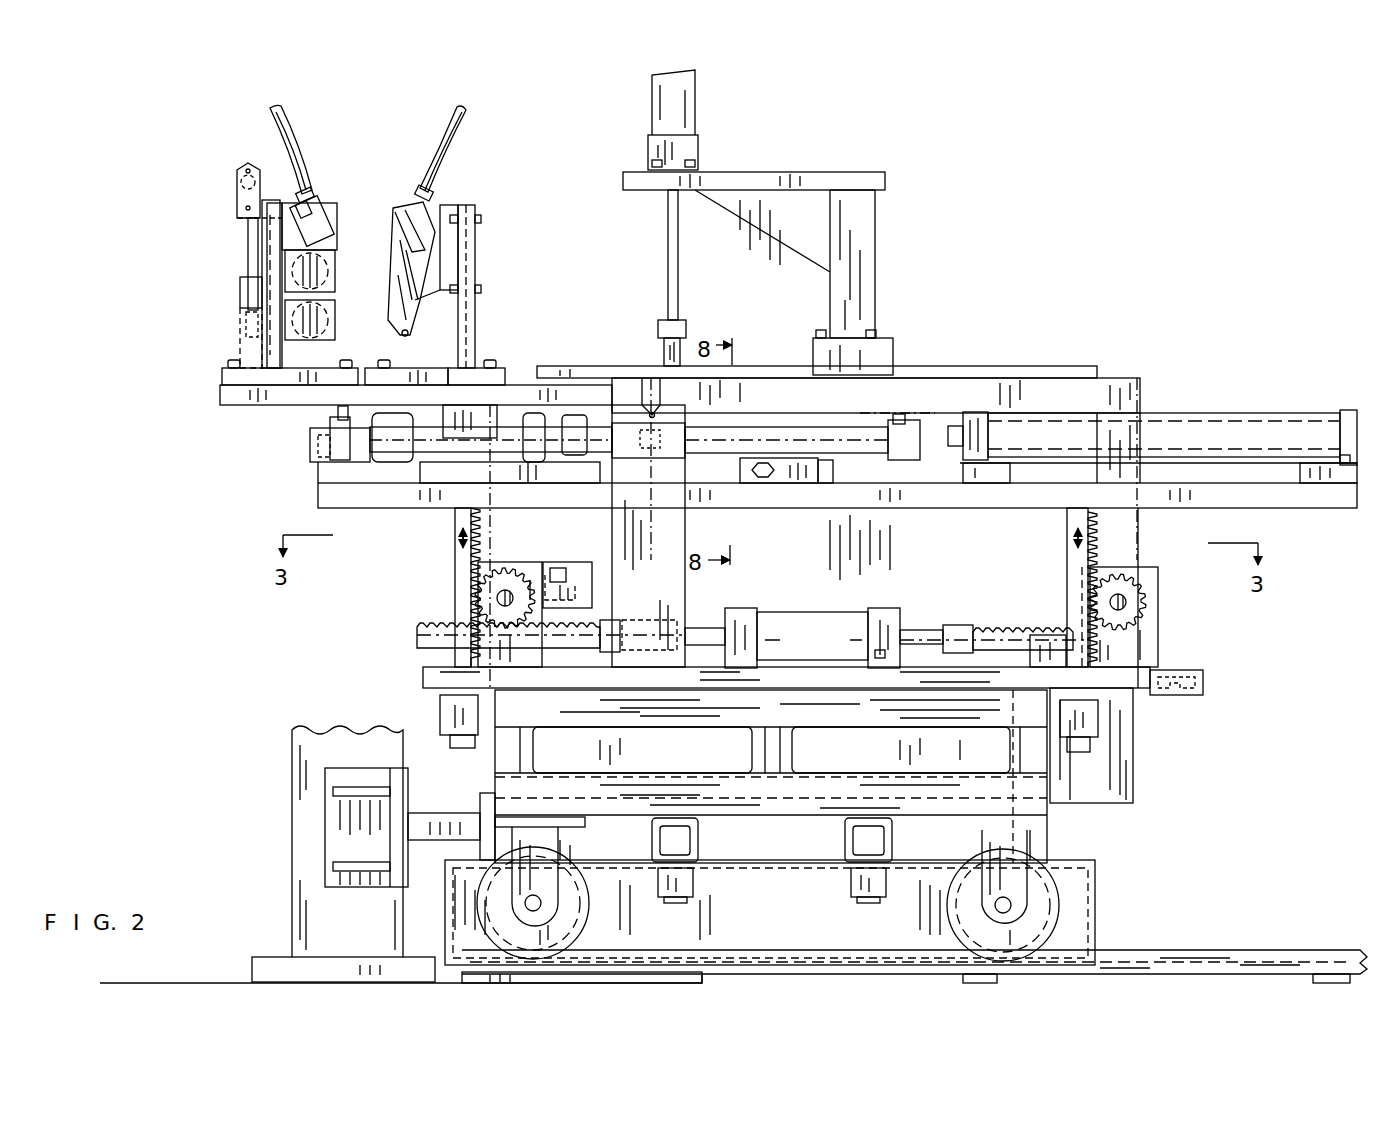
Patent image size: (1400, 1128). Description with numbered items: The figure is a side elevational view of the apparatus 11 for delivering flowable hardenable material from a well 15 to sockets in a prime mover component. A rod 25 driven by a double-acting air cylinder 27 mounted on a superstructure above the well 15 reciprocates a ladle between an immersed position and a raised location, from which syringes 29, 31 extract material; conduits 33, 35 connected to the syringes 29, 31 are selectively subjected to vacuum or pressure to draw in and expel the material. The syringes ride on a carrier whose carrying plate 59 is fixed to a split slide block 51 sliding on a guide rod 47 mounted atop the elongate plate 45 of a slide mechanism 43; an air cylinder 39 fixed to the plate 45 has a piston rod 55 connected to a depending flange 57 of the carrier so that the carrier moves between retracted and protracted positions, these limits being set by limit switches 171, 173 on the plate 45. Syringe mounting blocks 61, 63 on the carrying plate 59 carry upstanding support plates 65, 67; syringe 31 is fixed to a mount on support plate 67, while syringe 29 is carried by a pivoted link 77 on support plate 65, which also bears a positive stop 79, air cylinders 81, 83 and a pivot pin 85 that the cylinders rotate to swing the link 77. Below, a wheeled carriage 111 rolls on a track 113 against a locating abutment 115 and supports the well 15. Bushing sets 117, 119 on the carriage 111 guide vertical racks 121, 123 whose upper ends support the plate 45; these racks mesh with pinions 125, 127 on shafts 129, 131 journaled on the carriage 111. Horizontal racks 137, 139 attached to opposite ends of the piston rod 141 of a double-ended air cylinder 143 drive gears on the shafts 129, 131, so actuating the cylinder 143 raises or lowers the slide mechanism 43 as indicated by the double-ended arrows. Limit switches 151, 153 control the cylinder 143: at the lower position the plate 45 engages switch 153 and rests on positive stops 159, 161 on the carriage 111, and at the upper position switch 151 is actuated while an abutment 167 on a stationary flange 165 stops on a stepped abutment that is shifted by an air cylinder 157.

The apparatus 11 is at (1178, 357).
The well 15 is at (1068, 365).
The rod 25 is at (678, 292).
The double-acting air cylinder 27 is at (697, 106).
The syringe 29 is at (318, 220).
The syringe 31 is at (400, 216).
The conduit 33 is at (290, 153).
The conduit 35 is at (460, 127).
The double acting air cylinder 39 is at (1210, 452).
The slide mechanism 43 is at (1320, 528).
The plate 45 is at (1342, 506).
The guide rod 47 is at (435, 448).
The split slide block 51 is at (372, 466).
The piston rod 55 is at (938, 434).
The depending flange 57 is at (460, 412).
The carrying plate 59 is at (222, 394).
The syringe mounting block 61 is at (222, 379).
The syringe mounting block 63 is at (467, 366).
The support plate 65 is at (276, 203).
The support plate 67 is at (477, 253).
The link 77 is at (258, 247).
The positive stop 79 is at (237, 189).
The air cylinder 81 is at (328, 266).
The air cylinder 83 is at (328, 313).
The pivot pin 85 is at (878, 267).
The wheeled carriage 111 is at (1218, 763).
The track 113 is at (1147, 958).
The locating abutment 115 is at (482, 806).
The bushing set 117 is at (440, 712).
The bushing set 119 is at (1100, 718).
The vertical rack 121 is at (455, 552).
The vertical rack 123 is at (1097, 530).
The pinion 125 is at (478, 588).
The pinion 127 is at (1135, 613).
The shaft 129 is at (497, 598).
The shaft 131 is at (1126, 601).
The horizontal rack 137 is at (417, 636).
The horizontal rack 139 is at (1022, 616).
The piston rod 141 is at (712, 624).
The double ended, double acting air cylinder 143 is at (836, 649).
The limit switch 151 is at (656, 401).
The limit switch 153 is at (560, 565).
The air cylinder 157 is at (662, 417).
The positive stop 159 is at (508, 562).
The positive stop 161 is at (1145, 568).
The stationary flange 165 is at (683, 586).
The abutment 167 is at (672, 508).
The limit switch 171 is at (338, 413).
The limit switch 173 is at (893, 418).